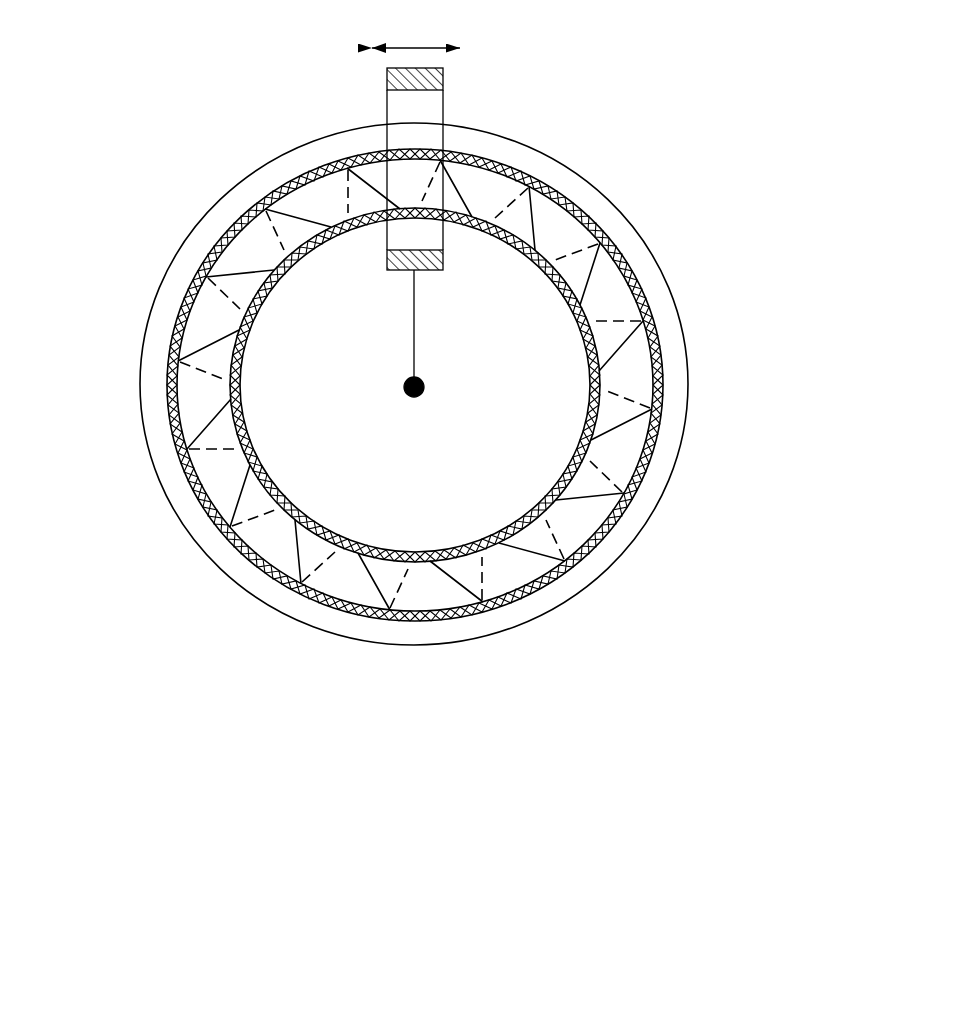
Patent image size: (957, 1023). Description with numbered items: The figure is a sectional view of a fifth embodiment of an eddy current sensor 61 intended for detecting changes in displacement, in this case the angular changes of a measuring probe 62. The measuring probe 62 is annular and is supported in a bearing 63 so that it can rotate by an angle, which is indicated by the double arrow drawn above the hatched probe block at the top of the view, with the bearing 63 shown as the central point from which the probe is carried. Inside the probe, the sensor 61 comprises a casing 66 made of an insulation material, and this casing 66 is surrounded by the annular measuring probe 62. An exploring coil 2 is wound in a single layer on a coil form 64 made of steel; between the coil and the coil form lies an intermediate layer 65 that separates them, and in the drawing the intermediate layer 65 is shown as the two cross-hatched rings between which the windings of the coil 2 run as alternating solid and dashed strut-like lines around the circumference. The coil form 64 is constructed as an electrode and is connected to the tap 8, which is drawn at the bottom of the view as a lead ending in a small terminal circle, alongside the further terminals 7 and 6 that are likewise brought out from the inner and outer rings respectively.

The exploring coil 2 is at (262, 223).
The outer ring node 6 is at (570, 568).
The inner ring node 7 is at (292, 517).
The tap 8 is at (412, 605).
The eddy current sensor 61 is at (432, 452).
The measuring probe 62 is at (357, 141).
The bearing 63 is at (430, 388).
The coil form 64 is at (479, 385).
The intermediate layer 65 is at (200, 498).
The casing 66 is at (692, 393).